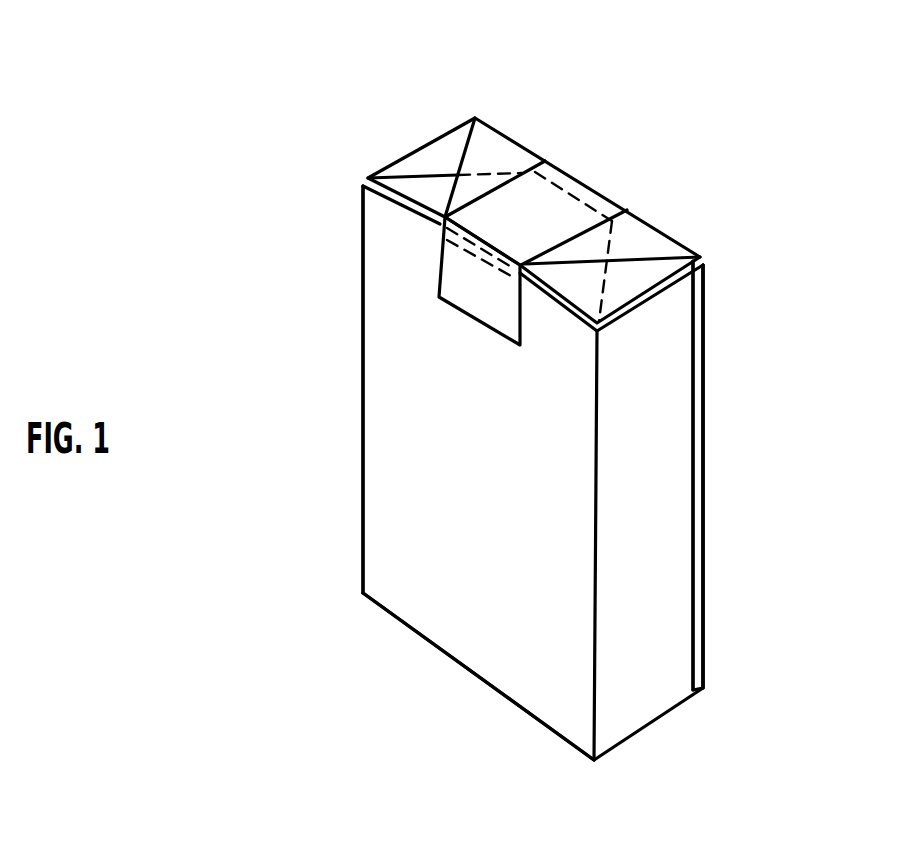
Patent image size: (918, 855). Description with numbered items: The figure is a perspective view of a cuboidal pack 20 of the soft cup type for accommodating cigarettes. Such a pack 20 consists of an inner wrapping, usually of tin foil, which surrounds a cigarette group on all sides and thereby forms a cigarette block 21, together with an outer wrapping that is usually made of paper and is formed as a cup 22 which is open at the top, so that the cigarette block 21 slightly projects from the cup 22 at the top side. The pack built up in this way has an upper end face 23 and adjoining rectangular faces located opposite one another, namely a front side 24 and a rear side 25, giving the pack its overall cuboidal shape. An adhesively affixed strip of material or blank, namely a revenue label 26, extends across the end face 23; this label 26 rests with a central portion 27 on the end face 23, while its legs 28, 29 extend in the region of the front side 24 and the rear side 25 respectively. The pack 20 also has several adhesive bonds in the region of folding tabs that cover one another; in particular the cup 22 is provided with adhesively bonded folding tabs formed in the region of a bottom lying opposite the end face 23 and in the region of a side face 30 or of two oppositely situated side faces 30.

The pack 20 is at (397, 688).
The cigarette block 21 is at (660, 203).
The cup 22 is at (703, 579).
The end face 23 is at (492, 162).
The front side 24 is at (507, 526).
The rear side 25 is at (703, 503).
The label 26 is at (577, 232).
The central portion 27 is at (573, 185).
The leg 28 is at (439, 273).
The leg 29 is at (562, 165).
The side face 30 is at (397, 163).